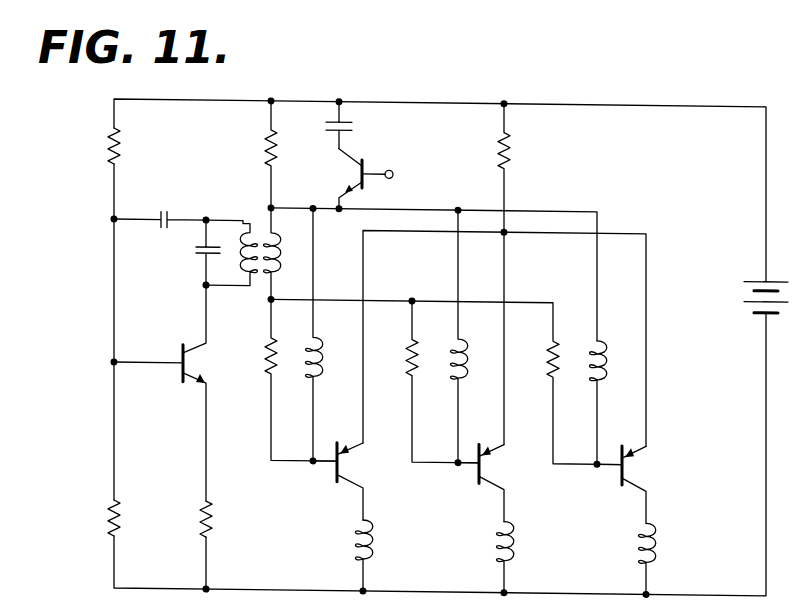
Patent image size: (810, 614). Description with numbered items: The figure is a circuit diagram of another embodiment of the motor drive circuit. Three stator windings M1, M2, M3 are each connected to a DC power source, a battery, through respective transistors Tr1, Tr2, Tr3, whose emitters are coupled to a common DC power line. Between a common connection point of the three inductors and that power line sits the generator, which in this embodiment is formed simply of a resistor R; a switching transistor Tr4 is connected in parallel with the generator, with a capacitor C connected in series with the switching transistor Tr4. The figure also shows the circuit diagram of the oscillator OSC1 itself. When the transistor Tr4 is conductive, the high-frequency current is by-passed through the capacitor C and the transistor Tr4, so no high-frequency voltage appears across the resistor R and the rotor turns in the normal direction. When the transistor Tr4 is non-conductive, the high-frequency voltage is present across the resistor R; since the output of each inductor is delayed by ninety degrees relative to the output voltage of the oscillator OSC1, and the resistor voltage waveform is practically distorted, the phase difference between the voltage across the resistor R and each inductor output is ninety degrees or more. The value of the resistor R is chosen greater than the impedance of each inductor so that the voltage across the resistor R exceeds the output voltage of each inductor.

The oscillator OSC1 is at (197, 240).
The resistor R is at (266, 148).
The capacitor C is at (353, 131).
The switching transistor Tr4 is at (364, 186).
The transistor Tr1 is at (335, 471).
The transistor Tr2 is at (477, 473).
The transistor Tr3 is at (620, 473).
The stator winding M1 is at (371, 541).
The stator winding M2 is at (512, 541).
The stator winding M3 is at (654, 541).